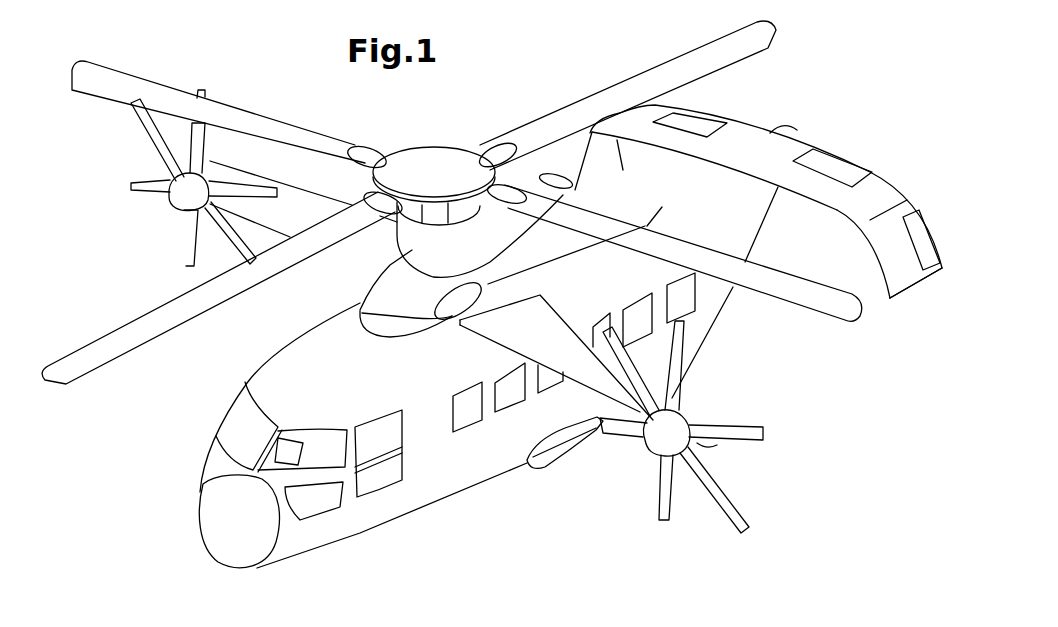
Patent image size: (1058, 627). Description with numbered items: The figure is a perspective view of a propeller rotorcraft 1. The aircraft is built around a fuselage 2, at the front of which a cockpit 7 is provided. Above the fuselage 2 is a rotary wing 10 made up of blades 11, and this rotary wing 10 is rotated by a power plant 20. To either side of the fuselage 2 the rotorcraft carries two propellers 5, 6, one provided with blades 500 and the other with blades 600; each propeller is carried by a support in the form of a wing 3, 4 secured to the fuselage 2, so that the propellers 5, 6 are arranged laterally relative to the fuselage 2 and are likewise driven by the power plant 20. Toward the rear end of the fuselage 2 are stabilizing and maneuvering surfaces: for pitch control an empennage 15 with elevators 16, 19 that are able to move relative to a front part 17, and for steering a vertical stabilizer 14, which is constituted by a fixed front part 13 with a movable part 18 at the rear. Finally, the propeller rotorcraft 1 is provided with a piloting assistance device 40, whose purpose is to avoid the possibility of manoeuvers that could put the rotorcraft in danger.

The propeller rotorcraft 1 is at (531, 535).
The fuselage 2 is at (427, 513).
The wing 3 is at (350, 284).
The wing 4 is at (698, 400).
The propeller 5 is at (141, 160).
The propeller 6 is at (692, 512).
The cockpit 7 is at (230, 422).
The rotary wing 10 is at (757, 318).
The blades 11 is at (118, 337).
The fixed front part 13 is at (903, 277).
The vertical stabilizer 14 is at (928, 208).
The empennage 15 is at (861, 153).
The elevator 16 is at (827, 158).
The front part 17 is at (820, 182).
The movable part 18 is at (923, 235).
The elevator 19 is at (692, 100).
The power plant 20 is at (446, 305).
The piloting assistance device 40 is at (291, 438).
The blades 500 is at (147, 190).
The blades 600 is at (733, 500).